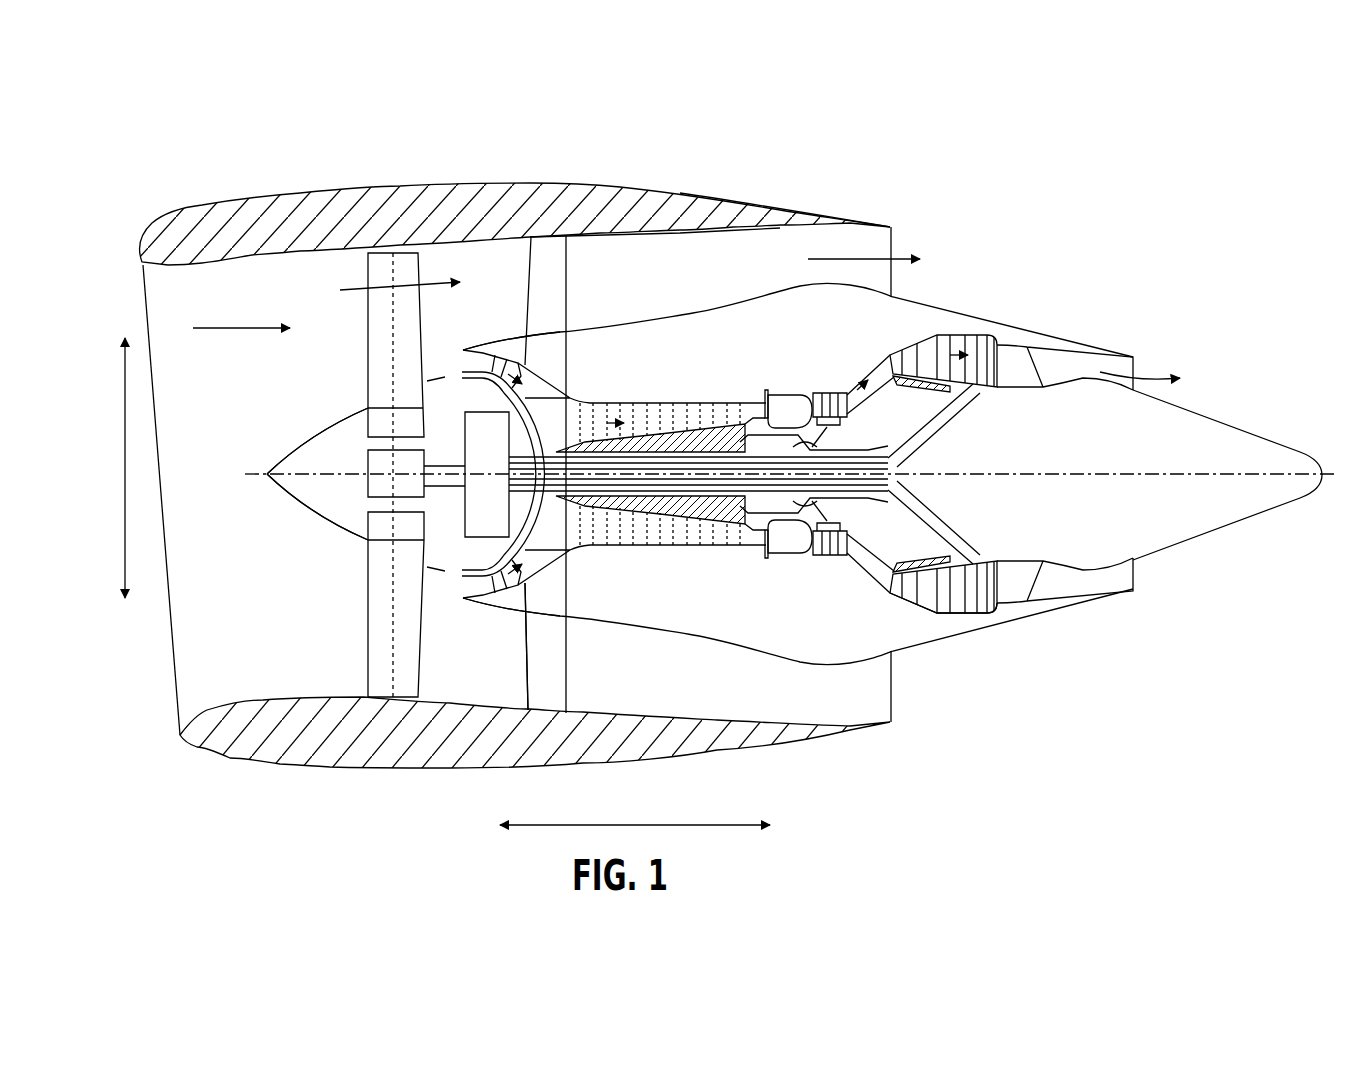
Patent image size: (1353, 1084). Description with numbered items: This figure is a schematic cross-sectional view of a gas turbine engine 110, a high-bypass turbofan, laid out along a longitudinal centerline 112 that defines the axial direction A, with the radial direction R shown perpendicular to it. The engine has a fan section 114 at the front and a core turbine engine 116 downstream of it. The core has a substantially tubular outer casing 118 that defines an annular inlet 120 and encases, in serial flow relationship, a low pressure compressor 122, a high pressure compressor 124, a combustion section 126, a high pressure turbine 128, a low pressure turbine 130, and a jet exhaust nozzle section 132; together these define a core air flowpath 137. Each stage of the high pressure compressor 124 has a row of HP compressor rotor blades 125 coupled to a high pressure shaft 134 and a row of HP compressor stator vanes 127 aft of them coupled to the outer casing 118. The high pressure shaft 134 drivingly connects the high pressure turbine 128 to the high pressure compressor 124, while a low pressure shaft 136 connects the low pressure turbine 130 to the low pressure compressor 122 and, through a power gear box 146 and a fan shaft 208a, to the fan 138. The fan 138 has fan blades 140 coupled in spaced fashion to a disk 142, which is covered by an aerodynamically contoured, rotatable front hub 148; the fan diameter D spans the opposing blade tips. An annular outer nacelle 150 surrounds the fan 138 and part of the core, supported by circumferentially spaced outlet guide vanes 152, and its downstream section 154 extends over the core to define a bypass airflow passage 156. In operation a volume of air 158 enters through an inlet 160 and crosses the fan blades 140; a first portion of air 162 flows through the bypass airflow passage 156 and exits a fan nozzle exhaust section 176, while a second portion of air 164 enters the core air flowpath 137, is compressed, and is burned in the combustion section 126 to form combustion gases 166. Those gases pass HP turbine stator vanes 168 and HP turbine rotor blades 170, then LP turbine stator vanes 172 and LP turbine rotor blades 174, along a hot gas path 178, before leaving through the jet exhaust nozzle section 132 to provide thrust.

The gas turbine engine 110 is at (850, 155).
The longitudinal centerline 112 is at (1060, 474).
The fan section 114 is at (275, 283).
The core turbine engine 116 is at (775, 332).
The outer casing 118 is at (737, 652).
The annular inlet 120 is at (466, 588).
The low pressure compressor 122 is at (524, 567).
The high pressure compressor 124 is at (598, 549).
The HP compressor rotor blades 125 is at (655, 550).
The combustion section 126 is at (768, 558).
The HP compressor stator vanes 127 is at (690, 548).
The high pressure turbine 128 is at (850, 550).
The low pressure turbine 130 is at (980, 610).
The jet exhaust nozzle section 132 is at (1040, 592).
The high pressure shaft 134 is at (825, 442).
The low pressure shaft 136 is at (908, 459).
The core air flowpath 137 is at (540, 559).
The fan 138 is at (322, 524).
The fan blades 140 is at (366, 620).
The disk 142 is at (338, 422).
The power gear box 146 is at (572, 398).
The front hub 148 is at (277, 493).
The outer nacelle 150 is at (410, 768).
The outlet guide vanes 152 is at (575, 264).
The downstream section 154 is at (781, 198).
The bypass airflow passage 156 is at (655, 253).
The volume of air 158 is at (230, 327).
The inlet 160 is at (175, 713).
The first portion of air 162 is at (367, 283).
The second portion of air 164 is at (462, 360).
The combustion gases 166 is at (922, 348).
The HP turbine stator vanes 168 is at (800, 558).
The HP turbine rotor blades 170 is at (843, 531).
The LP turbine stator vanes 172 is at (895, 602).
The LP turbine rotor blades 174 is at (902, 609).
The fan nozzle exhaust section 176 is at (893, 238).
The hot gas path 178 is at (874, 356).
The fan shaft 208a is at (452, 463).